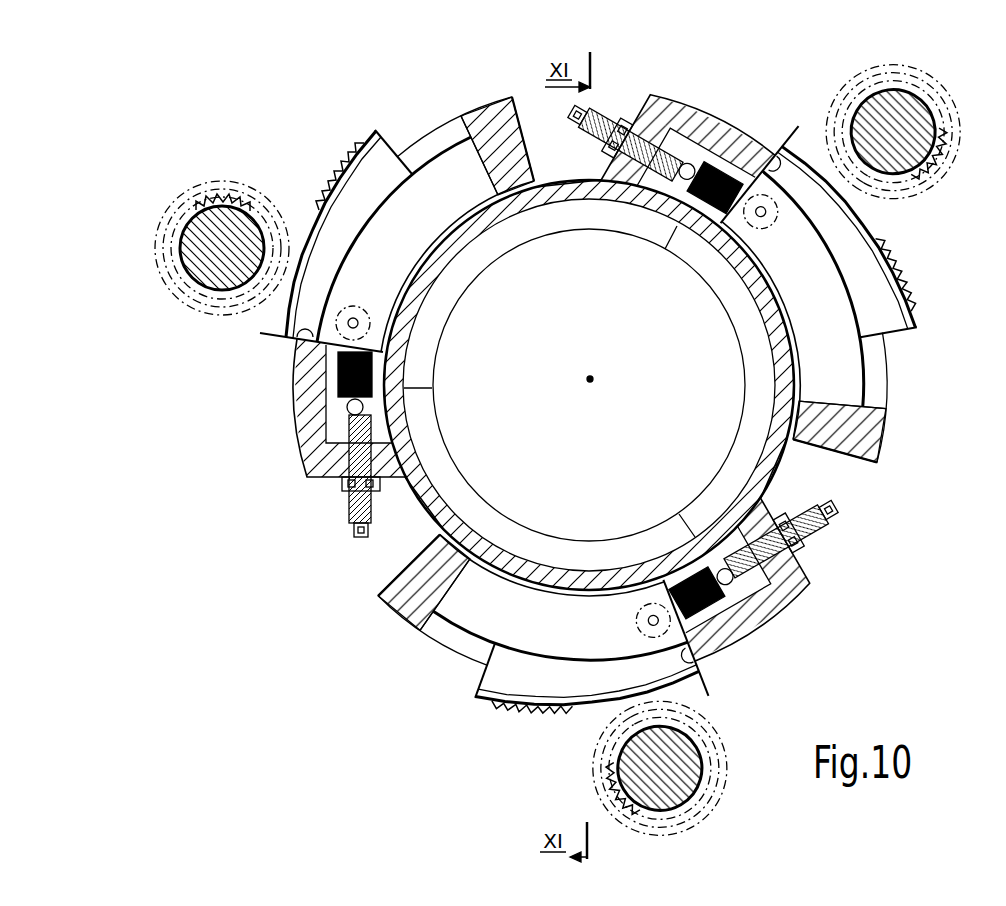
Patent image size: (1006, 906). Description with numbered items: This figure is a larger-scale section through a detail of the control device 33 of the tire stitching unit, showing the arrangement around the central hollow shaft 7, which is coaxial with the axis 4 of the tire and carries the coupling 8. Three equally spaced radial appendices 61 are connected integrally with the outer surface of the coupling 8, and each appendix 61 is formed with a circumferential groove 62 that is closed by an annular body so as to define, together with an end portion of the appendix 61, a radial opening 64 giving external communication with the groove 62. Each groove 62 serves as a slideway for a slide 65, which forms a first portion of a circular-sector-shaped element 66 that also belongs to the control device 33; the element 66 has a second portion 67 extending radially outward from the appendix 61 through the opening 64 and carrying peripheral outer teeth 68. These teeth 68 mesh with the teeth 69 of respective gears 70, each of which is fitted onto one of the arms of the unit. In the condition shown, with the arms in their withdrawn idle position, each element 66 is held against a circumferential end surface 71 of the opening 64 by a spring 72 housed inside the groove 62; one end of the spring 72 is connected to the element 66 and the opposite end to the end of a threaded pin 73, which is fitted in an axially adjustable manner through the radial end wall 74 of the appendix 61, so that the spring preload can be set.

The axis 4 is at (593, 372).
The central hollow shaft 7 is at (470, 262).
The coupling 8 is at (580, 185).
The control device 33 is at (318, 575).
The radial appendix 61 is at (376, 598).
The circumferential groove 62 is at (328, 402).
The radial opening 64 is at (432, 630).
The slide 65 is at (482, 648).
The circular-sector-shaped element 66 is at (292, 330).
The second portion 67 is at (502, 712).
The peripheral outer teeth 68 is at (520, 722).
The teeth 69 is at (592, 758).
The gear 70 is at (215, 300).
The circumferential end surface 71 is at (345, 332).
The spring 72 is at (693, 537).
The threaded pin 73 is at (348, 512).
The radial end wall 74 is at (340, 481).